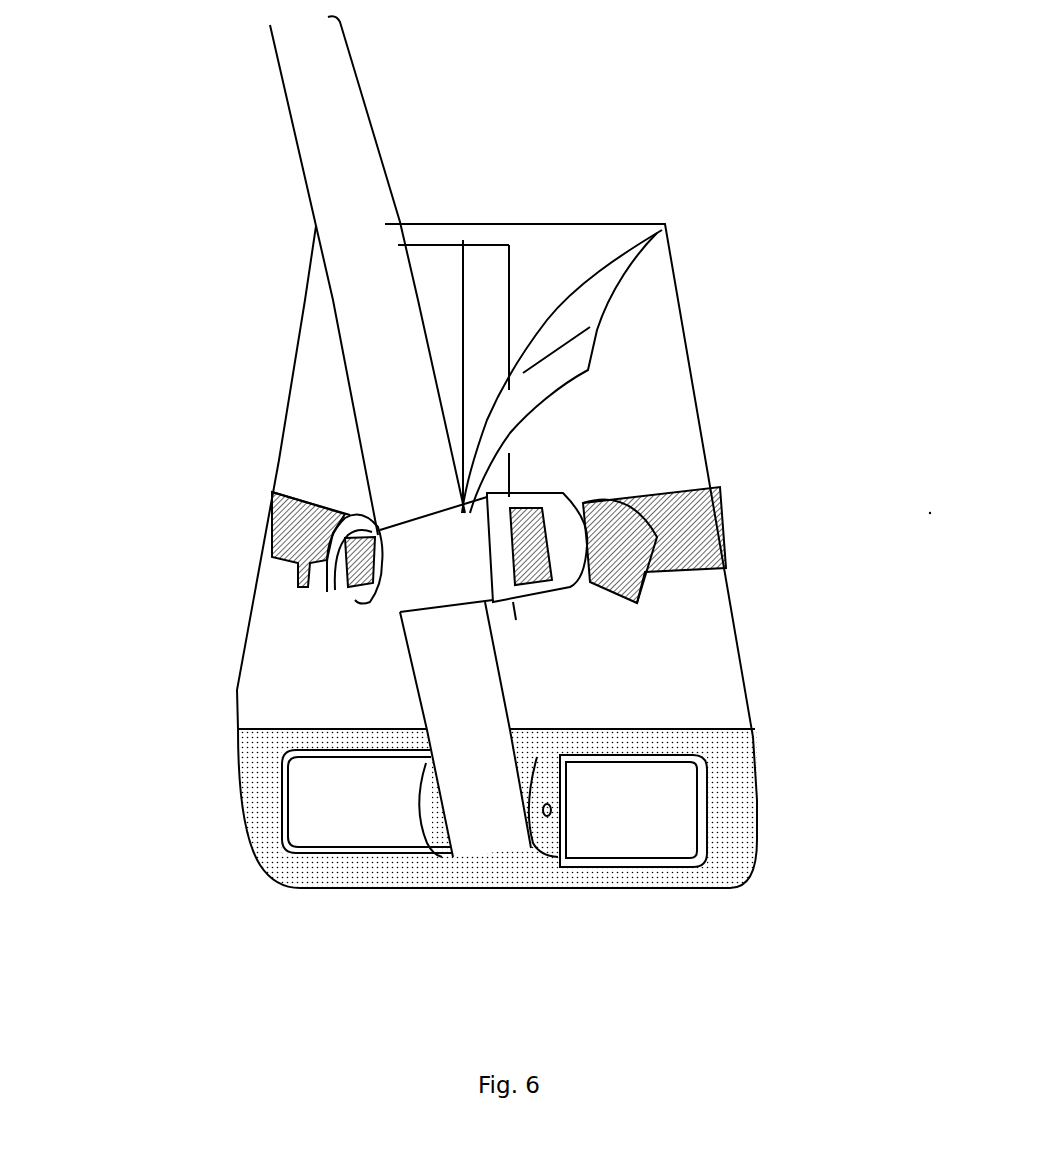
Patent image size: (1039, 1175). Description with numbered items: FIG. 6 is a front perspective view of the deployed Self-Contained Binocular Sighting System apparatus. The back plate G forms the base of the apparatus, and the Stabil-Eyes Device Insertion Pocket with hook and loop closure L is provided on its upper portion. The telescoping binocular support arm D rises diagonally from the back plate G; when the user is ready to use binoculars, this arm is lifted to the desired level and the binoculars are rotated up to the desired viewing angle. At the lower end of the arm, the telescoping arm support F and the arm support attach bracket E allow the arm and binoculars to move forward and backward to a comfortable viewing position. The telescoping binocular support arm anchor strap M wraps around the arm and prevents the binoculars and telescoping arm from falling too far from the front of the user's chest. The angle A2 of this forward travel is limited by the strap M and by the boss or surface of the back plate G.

The telescoping binocular support arm D is at (335, 143).
The Stabil-Eyes device insertion pocket with hook and loop closure L is at (512, 407).
The telescoping binocular support arm anchor strap M is at (607, 542).
The angle A2 is at (560, 867).
The telescoping arm support F is at (323, 805).
The back plate G is at (713, 817).
The arm support attach bracket E is at (425, 800).